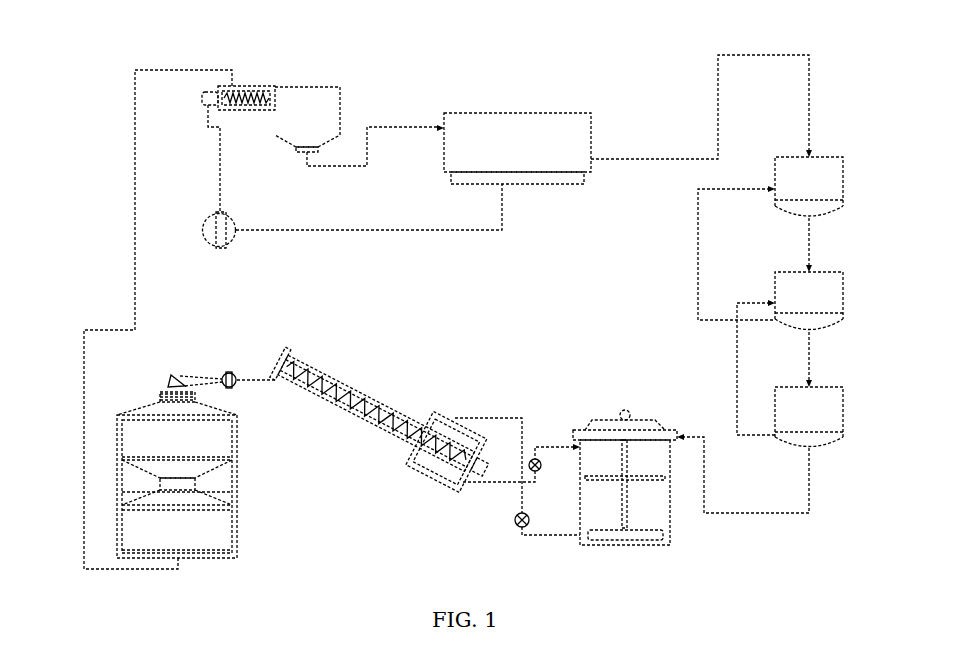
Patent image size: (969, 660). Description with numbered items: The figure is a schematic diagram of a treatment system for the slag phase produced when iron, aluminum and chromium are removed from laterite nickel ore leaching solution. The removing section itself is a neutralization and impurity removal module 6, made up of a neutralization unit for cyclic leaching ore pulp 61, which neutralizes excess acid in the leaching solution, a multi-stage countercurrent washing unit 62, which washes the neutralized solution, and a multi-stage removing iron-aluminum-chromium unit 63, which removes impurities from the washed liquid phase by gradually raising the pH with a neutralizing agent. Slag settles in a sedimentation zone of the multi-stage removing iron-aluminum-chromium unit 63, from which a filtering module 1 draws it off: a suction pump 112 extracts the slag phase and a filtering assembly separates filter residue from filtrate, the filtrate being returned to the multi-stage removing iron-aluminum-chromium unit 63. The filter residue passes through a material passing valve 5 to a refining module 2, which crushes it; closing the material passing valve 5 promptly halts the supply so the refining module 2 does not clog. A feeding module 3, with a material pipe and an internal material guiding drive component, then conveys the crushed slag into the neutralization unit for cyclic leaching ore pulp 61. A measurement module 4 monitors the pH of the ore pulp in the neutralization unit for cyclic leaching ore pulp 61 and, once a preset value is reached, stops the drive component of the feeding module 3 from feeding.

The filtering module 1 is at (445, 514).
The refining module 2 is at (102, 513).
The feeding module 3 is at (255, 72).
The measurement module 4 is at (186, 228).
The material passing valve 5 is at (160, 388).
The neutralization and impurity removal module 6 is at (830, 82).
The neutralization unit for cyclic leaching ore pulp 61 is at (528, 128).
The multi-stage countercurrent washing unit 62 is at (827, 303).
The multi-stage removing iron-aluminum-chromium unit 63 is at (651, 521).
The suction pump 112 is at (527, 530).